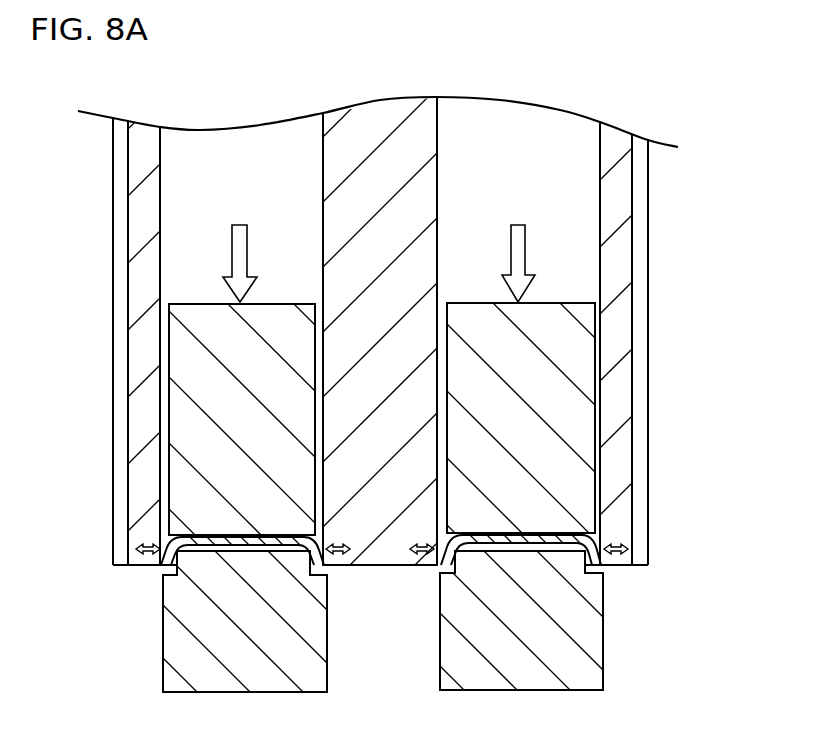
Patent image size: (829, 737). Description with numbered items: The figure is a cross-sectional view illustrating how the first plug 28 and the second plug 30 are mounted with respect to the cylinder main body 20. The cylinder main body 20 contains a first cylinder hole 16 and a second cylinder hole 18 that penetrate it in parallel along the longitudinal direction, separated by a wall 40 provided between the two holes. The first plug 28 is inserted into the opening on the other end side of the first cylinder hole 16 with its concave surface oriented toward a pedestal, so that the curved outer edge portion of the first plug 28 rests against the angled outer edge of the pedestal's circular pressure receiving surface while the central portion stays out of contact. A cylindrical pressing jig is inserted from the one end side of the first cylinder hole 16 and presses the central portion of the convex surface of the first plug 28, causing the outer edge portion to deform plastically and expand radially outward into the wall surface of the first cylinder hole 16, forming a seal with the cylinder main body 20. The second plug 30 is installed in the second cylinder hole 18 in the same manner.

The first cylinder hole 16 is at (512, 125).
The second cylinder hole 18 is at (212, 145).
The cylinder main body 20 is at (612, 208).
The first plug 28 is at (521, 545).
The second plug 30 is at (242, 546).
The wall 40 is at (377, 118).